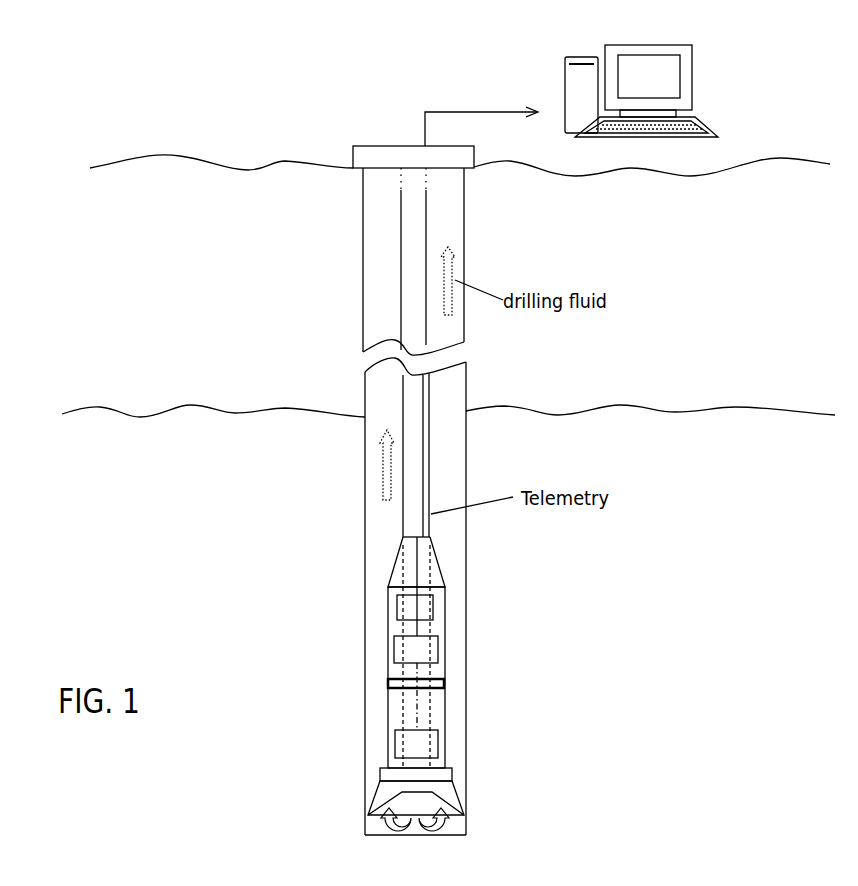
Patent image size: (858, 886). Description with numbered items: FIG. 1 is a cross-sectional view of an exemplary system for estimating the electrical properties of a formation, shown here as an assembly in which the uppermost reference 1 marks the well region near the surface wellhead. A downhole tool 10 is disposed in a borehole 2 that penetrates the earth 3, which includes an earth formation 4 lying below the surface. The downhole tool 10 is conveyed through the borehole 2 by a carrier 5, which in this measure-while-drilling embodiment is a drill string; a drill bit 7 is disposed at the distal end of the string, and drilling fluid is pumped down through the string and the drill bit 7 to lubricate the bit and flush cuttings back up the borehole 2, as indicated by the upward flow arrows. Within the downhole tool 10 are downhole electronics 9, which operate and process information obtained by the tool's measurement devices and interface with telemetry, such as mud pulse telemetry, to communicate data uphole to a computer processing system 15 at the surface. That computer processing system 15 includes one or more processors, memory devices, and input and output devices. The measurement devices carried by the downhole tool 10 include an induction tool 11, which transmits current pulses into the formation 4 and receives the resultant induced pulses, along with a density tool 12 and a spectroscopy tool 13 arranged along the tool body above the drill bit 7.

The wellbore casing 1 is at (450, 201).
The borehole 2 is at (399, 260).
The earth 3 is at (742, 260).
The earth formation 4 is at (825, 575).
The carrier 5 is at (403, 397).
The drill bit 7 is at (385, 790).
The downhole electronics 9 is at (415, 608).
The downhole tool 10 is at (384, 633).
The induction tool 11 is at (438, 646).
The density tool 12 is at (440, 678).
The spectroscopy tool 13 is at (440, 748).
The computer processing system 15 is at (660, 88).